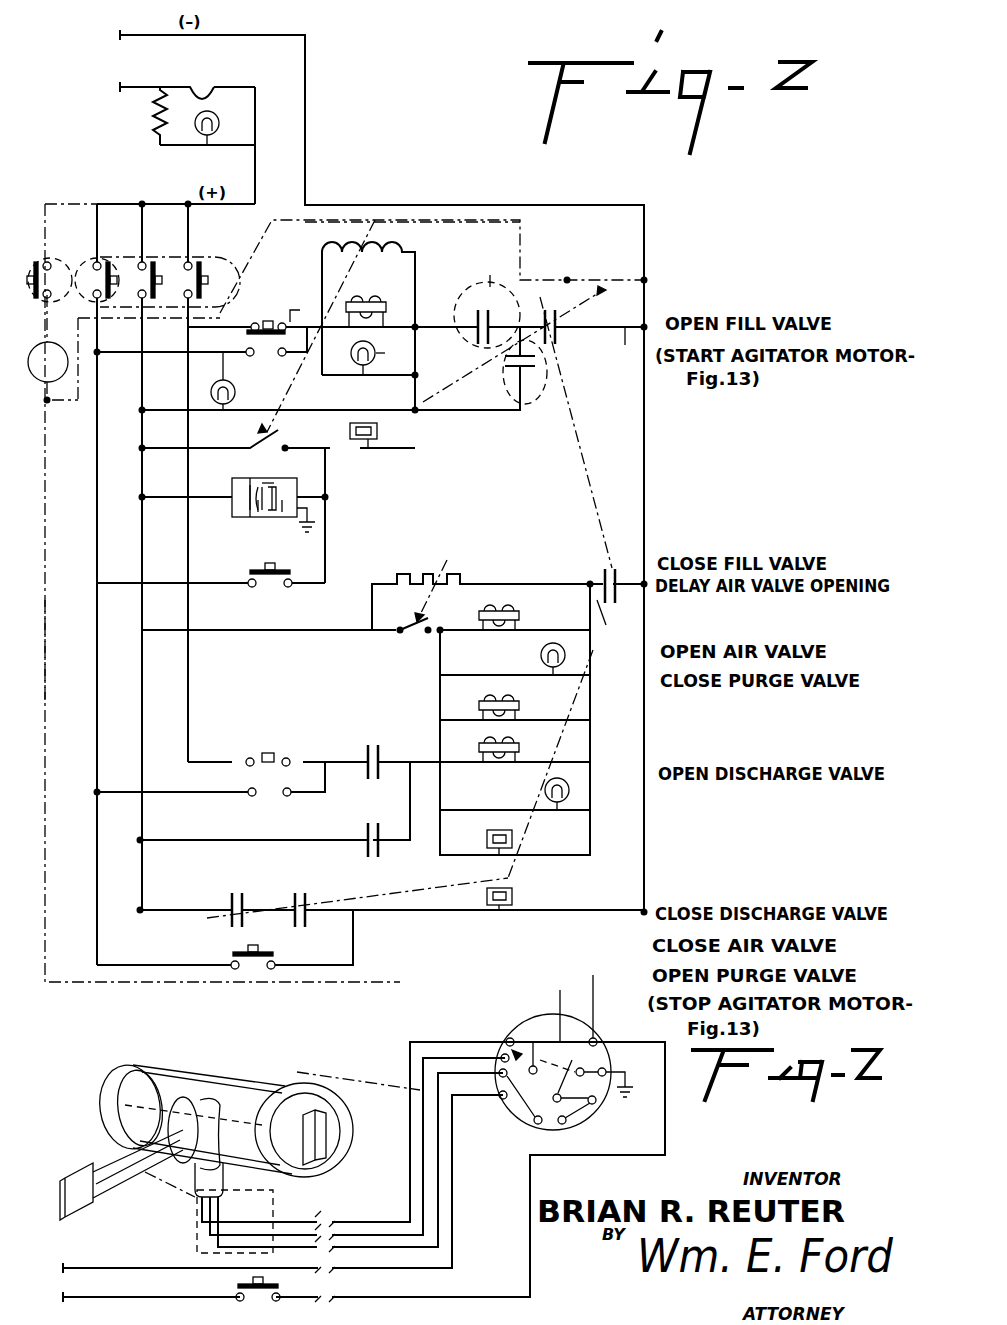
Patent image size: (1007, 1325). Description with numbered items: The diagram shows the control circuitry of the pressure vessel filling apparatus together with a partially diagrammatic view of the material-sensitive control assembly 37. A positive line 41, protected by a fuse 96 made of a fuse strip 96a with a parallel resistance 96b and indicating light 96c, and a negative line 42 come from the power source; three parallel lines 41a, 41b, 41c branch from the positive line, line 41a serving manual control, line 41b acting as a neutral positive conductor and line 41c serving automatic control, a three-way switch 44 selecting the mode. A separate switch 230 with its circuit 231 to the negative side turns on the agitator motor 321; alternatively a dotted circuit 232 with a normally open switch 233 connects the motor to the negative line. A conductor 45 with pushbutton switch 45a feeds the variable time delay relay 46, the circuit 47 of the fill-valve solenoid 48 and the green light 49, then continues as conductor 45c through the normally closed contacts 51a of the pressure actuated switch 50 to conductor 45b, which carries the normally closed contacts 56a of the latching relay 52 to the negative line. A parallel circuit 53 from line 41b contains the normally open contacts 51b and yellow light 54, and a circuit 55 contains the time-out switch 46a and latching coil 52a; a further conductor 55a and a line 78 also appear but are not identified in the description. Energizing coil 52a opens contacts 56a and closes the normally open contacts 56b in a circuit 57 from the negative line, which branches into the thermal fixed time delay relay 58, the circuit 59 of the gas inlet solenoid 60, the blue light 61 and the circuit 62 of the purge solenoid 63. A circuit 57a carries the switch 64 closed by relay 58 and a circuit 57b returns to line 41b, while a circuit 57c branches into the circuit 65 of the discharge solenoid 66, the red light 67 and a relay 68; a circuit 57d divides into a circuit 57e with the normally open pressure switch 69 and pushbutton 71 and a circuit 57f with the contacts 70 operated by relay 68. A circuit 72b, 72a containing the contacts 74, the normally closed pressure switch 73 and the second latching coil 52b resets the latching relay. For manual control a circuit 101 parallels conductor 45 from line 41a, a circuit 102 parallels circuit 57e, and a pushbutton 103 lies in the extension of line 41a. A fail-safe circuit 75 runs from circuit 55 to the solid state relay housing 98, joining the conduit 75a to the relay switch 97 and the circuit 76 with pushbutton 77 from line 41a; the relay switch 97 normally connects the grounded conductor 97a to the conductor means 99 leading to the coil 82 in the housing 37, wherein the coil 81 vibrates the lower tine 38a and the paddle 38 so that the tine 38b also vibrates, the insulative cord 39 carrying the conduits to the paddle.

In FIG. 2, the negative line 42 is at (120, 35).
In FIG. 2, the positive line 41 is at (124, 82).
In FIG. 2, the fuse 96 is at (178, 124).
In FIG. 2, the fuse strip 96a is at (238, 68).
In FIG. 2, the resistance 96b is at (162, 130).
In FIG. 2, the indicating light 96c is at (218, 125).
In FIG. 2, the switch 230 is at (45, 230).
In FIG. 2, the circuit 231 is at (46, 660).
In FIG. 2, the motor 321 is at (70, 396).
In FIG. 2, the line 41a is at (95, 248).
In FIG. 2, the line 41b is at (138, 244).
In FIG. 2, the line 41c is at (188, 244).
In FIG. 2, the three-way switch 44 is at (226, 230).
In FIG. 2, the conductor 45 is at (262, 318).
In FIG. 2, the pushbutton switch 45a is at (294, 308).
In FIG. 2, the conductor 45b is at (625, 345).
In FIG. 2, the conductor 45c is at (433, 320).
In FIG. 2, the variable time delay relay 46 is at (342, 246).
In FIG. 2, the switch 46a is at (250, 445).
In FIG. 2, the circuit 47 is at (370, 310).
In FIG. 2, the solenoid 48 is at (355, 332).
In FIG. 2, the indicator light 49 is at (377, 361).
In FIG. 2, the double acting pressure actuated switch 50 is at (490, 288).
In FIG. 2, the contacts 51a is at (478, 334).
In FIG. 2, the contacts 51b is at (510, 376).
In FIG. 2, the latching relay 52 is at (574, 465).
In FIG. 2, the latching relay coil 52a is at (348, 430).
In FIG. 2, the latching relay coil 52b is at (486, 892).
In FIG. 2, the parallel circuit 53 is at (332, 408).
In FIG. 2, the indicating light 54 is at (236, 377).
In FIG. 2, the parallel circuit 55 is at (418, 422).
In FIG. 3, the parallel circuit 55 is at (560, 988).
In FIG. 2, the conductor 55a is at (246, 448).
In FIG. 2, the relay contacts 56a is at (558, 347).
In FIG. 2, the contacts 56b is at (610, 582).
In FIG. 2, the circuit 57 is at (605, 602).
In FIG. 2, the circuit 57a is at (392, 632).
In FIG. 2, the circuit 57b is at (294, 632).
In FIG. 2, the circuit 57c is at (572, 763).
In FIG. 2, the circuit 57d is at (412, 762).
In FIG. 2, the circuit 57e is at (328, 762).
In FIG. 2, the circuit 57f is at (406, 778).
In FIG. 2, the fixed time delay relay 58 is at (449, 566).
In FIG. 2, the circuit 59 is at (514, 610).
In FIG. 2, the solenoid 60 is at (428, 612).
In FIG. 2, the light 61 is at (540, 656).
In FIG. 2, the circuit 62 is at (507, 704).
In FIG. 2, the solenoid 63 is at (475, 708).
In FIG. 2, the switch 64 is at (406, 612).
In FIG. 2, the circuit 65 is at (497, 744).
In FIG. 2, the solenoid 66 is at (467, 753).
In FIG. 2, the light 67 is at (540, 794).
In FIG. 2, the relay 68 is at (516, 842).
In FIG. 2, the pressure actuated switch 69 is at (367, 770).
In FIG. 2, the contacts 70 is at (360, 832).
In FIG. 2, the pushbutton switch 71 is at (252, 756).
In FIG. 2, the circuit 72a is at (625, 902).
In FIG. 2, the circuit 72b is at (332, 915).
In FIG. 2, the pressure sensitive switch 73 is at (345, 882).
In FIG. 2, the contacts 74 is at (228, 896).
In FIG. 2, the fail-safe circuit 75 is at (312, 485).
In FIG. 3, the fail-safe circuit 75 is at (593, 975).
In FIG. 2, the conduit 75a is at (284, 518).
In FIG. 3, the conduit 75a is at (555, 992).
In FIG. 2, the circuit 76 is at (323, 556).
In FIG. 3, the circuit 76 is at (143, 1297).
In FIG. 2, the pushbutton switch 77 is at (278, 586).
In FIG. 3, the pushbutton switch 77 is at (295, 1282).
In FIG. 2, the conductor 78 is at (214, 500).
In FIG. 3, the conductor 78 is at (165, 1264).
In FIG. 2, the relay switch 97 is at (262, 516).
In FIG. 3, the relay switch 97 is at (605, 1104).
In FIG. 2, the grounded conductor 97a is at (314, 523).
In FIG. 3, the grounded conductor 97a is at (640, 1066).
In FIG. 2, the solid state relay housing 98 is at (274, 477).
In FIG. 3, the solid state relay housing 98 is at (525, 1032).
In FIG. 2, the conductor means 99 is at (268, 462).
In FIG. 3, the conductor means 99 is at (553, 1123).
In FIG. 2, the circuit 101 is at (246, 352).
In FIG. 2, the circuit 102 is at (240, 796).
In FIG. 2, the pushbutton 103 is at (232, 954).
In FIG. 2, the circuit 232 is at (520, 238).
In FIG. 2, the normally open switch 233 is at (580, 284).
In FIG. 2, the control assembly 37 is at (238, 534).
In FIG. 3, the control assembly 37 is at (236, 1062).
In FIG. 3, the paddle 38 is at (75, 1175).
In FIG. 3, the lower tuning fork tine 38a is at (115, 1197).
In FIG. 3, the tine 38b is at (110, 1140).
In FIG. 3, the insulative cord 39 is at (196, 1222).
In FIG. 3, the coil 81 is at (397, 1078).
In FIG. 3, the coil 82 is at (485, 1107).